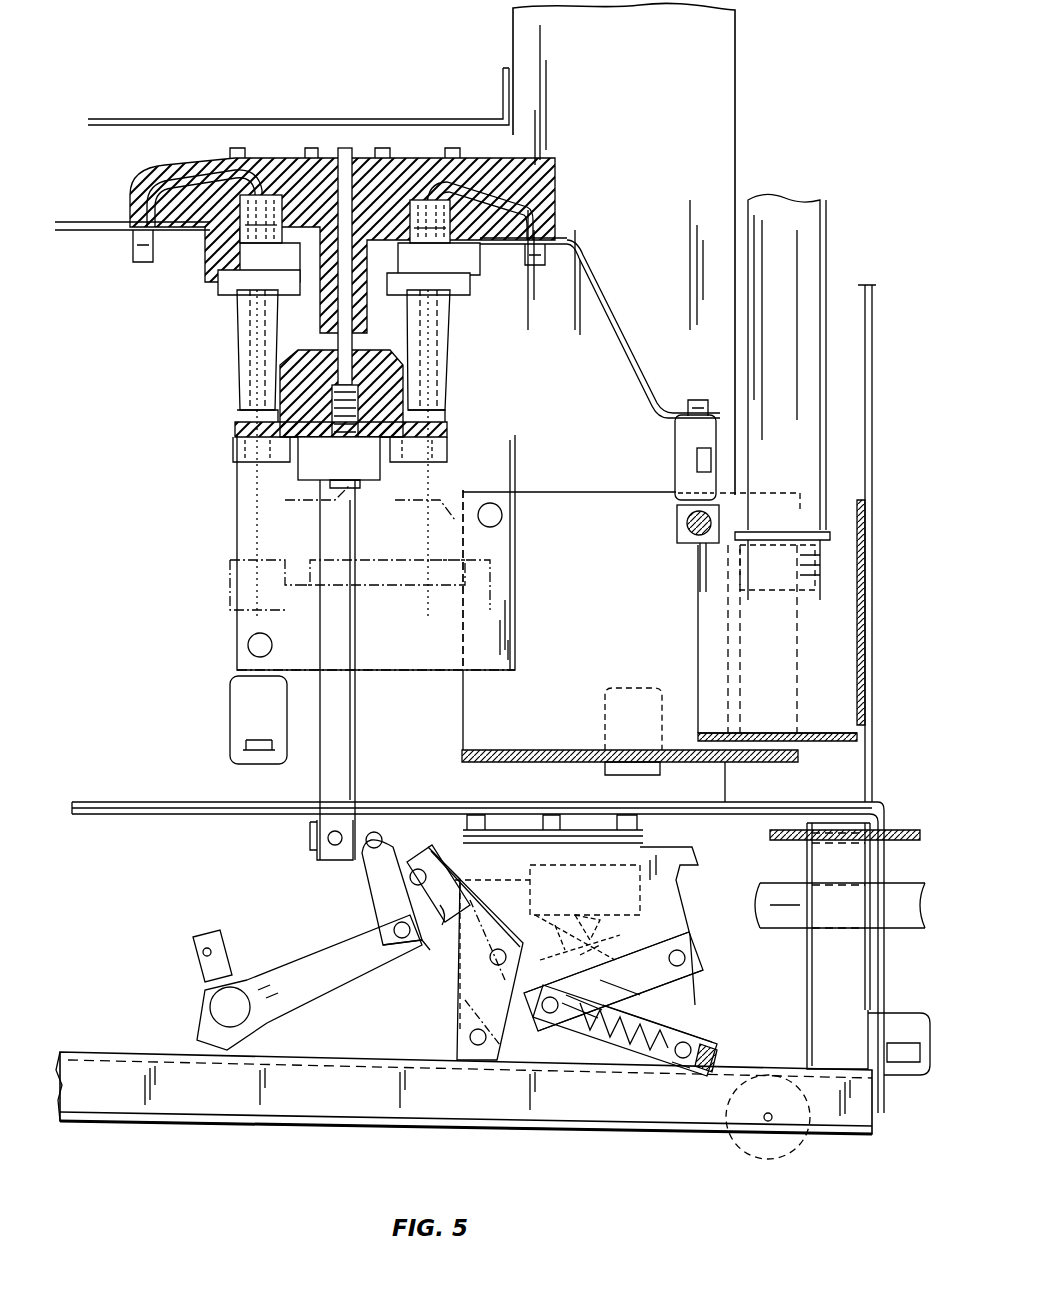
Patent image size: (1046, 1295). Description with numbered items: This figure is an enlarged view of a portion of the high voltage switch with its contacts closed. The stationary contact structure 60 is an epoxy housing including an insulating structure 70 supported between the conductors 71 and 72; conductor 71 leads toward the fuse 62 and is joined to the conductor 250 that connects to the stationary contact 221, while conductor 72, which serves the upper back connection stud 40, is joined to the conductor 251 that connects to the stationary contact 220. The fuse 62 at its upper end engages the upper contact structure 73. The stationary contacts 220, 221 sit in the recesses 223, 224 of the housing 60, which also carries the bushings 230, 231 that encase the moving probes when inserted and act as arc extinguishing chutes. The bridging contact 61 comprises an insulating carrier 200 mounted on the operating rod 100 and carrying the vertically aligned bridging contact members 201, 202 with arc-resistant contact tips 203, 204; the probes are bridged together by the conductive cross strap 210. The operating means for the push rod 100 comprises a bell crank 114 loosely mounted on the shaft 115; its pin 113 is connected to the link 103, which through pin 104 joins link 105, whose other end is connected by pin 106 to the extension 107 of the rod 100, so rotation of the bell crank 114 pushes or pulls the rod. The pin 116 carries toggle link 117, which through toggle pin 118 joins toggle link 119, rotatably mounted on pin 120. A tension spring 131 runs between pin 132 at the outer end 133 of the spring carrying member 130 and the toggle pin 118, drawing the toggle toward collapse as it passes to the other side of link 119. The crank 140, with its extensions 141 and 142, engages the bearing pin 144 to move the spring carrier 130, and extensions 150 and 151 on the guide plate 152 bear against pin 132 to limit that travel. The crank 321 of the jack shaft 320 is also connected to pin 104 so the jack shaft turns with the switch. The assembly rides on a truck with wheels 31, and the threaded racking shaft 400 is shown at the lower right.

The wheels 31 is at (762, 1152).
The upper back connection stud 40 is at (339, 462).
The stationary contact structure 60 is at (423, 153).
The bridging contact 61 is at (229, 428).
The fuse 62 is at (826, 255).
The insulating structure 70 is at (396, 158).
The conductor 71 is at (633, 331).
The conductor 72 is at (93, 233).
The upper contact structure 73 is at (673, 463).
The operating rod 100 is at (357, 750).
The link 103 is at (403, 940).
The pin 104 is at (418, 943).
The link 105 is at (372, 882).
The pin 106 is at (380, 830).
The extension 107 is at (312, 836).
The pin 113 is at (440, 842).
The bell crank 114 is at (470, 880).
The shaft 115 is at (490, 962).
The pin 116 is at (470, 1037).
The toggle link 117 is at (545, 1015).
The toggle pin 118 is at (580, 1015).
The toggle link 119 is at (667, 940).
The pin 120 is at (690, 958).
The spring carrying member 130 is at (632, 1062).
The tension spring 131 is at (695, 1005).
The pin 132 is at (700, 1050).
The outer end 133 is at (715, 1063).
The crank 140 is at (600, 930).
The extension 141 is at (603, 1050).
The extension 142 is at (617, 960).
The bearing pin 144 is at (630, 995).
The extension 150 is at (688, 853).
The extension 151 is at (682, 1077).
The guide plate 152 is at (672, 907).
The insulating carrier 200 is at (352, 380).
The bridging contact member 201 is at (450, 343).
The bridging contact member 202 is at (250, 358).
The contact tip 203 is at (430, 290).
The contact tip 204 is at (245, 280).
The conductive cross strap 210 is at (275, 465).
The stationary contact 220 is at (268, 195).
The stationary contact 221 is at (437, 253).
The recess 223 is at (477, 273).
The recess 224 is at (250, 250).
The bushing 230 is at (237, 322).
The bushing 231 is at (453, 355).
The conductor 250 is at (520, 210).
The conductor 251 is at (213, 187).
The jack shaft 320 is at (207, 1010).
The crank 321 is at (314, 956).
The racking shaft 400 is at (788, 928).